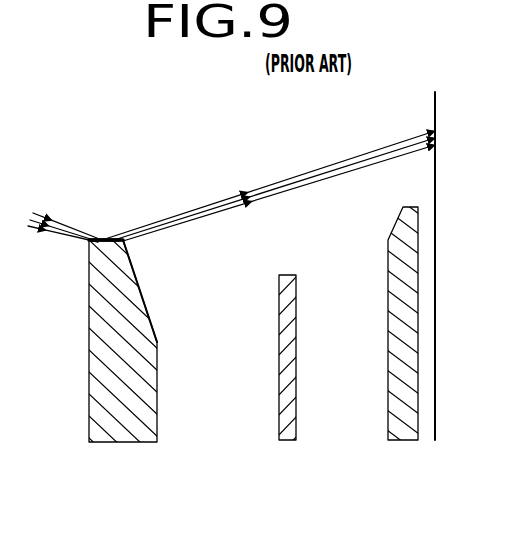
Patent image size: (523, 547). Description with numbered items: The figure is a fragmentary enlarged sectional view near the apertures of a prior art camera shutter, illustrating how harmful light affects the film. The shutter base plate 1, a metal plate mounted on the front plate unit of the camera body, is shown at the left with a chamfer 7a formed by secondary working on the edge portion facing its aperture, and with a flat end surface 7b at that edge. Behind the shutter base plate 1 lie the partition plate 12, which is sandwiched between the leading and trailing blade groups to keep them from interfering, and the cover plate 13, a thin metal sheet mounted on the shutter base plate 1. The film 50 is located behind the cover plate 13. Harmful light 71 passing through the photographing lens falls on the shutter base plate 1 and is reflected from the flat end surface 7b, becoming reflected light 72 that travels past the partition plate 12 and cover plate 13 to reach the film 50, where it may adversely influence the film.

The shutter base plate 1 is at (143, 393).
The chamfer 7a is at (137, 285).
The flat end surface 7b is at (103, 238).
The partition plate 12 is at (287, 338).
The cover plate 13 is at (398, 385).
The film 50 is at (436, 341).
The harmful light 71 is at (21, 226).
The reflected light 72 is at (302, 172).